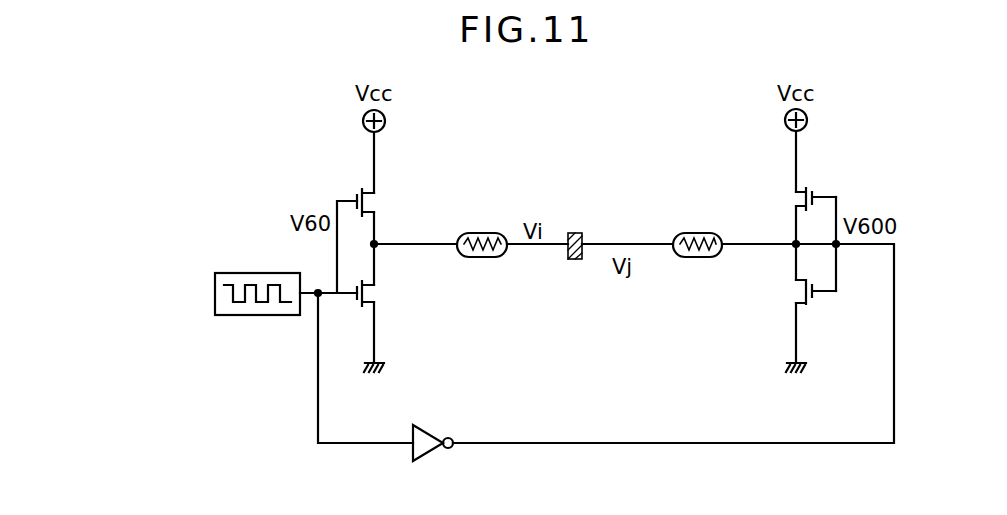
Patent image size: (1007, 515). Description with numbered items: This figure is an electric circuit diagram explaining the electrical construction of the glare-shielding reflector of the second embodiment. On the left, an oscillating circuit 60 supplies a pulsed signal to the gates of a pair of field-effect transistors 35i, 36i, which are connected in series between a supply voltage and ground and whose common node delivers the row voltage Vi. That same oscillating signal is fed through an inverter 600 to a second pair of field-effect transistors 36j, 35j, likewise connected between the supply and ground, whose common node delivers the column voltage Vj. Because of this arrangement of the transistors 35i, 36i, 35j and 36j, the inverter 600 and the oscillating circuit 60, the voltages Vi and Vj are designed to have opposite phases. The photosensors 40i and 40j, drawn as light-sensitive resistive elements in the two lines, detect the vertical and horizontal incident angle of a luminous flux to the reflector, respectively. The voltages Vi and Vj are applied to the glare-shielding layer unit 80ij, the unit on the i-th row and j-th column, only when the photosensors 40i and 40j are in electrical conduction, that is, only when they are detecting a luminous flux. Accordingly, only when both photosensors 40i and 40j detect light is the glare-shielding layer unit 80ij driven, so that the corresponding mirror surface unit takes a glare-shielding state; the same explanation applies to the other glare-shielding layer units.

The oscillating circuit 60 is at (281, 273).
The field-effect transistor 35i is at (357, 196).
The field-effect transistor 36i is at (357, 300).
The photosensor 40i is at (473, 233).
The glare-shielding layer unit 80ij is at (579, 233).
The photosensor 40j is at (700, 233).
The field-effect transistor 36j is at (815, 194).
The field-effect transistor 35j is at (815, 298).
The inverter 600 is at (430, 428).